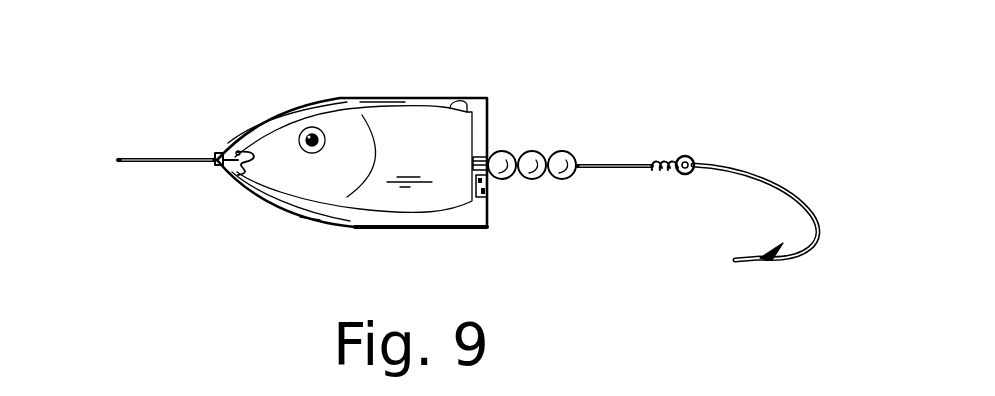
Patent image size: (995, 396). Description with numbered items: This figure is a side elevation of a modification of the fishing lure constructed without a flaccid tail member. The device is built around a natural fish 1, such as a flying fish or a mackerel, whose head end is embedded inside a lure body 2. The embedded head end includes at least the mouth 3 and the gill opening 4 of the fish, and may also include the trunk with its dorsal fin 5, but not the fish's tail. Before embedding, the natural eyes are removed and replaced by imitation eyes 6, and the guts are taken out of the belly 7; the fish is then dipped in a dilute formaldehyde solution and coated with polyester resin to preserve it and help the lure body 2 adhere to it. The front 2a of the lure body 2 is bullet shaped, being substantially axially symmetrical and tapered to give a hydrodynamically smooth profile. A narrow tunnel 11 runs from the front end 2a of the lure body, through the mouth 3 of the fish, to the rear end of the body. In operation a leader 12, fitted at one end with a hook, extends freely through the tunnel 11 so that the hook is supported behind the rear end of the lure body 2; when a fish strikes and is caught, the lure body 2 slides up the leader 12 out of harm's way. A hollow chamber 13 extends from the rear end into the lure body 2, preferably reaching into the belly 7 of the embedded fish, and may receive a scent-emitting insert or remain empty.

The natural fish 1 is at (278, 153).
The lure body 2 is at (362, 84).
The front of the lure body 2a is at (262, 130).
The mouth 3 is at (233, 178).
The gill opening 4 is at (363, 203).
The dorsal fin 5 is at (452, 104).
The imitation eyes 6 is at (318, 130).
The belly 7 is at (414, 203).
The tunnel 11 is at (486, 181).
The leader 12 is at (150, 158).
The hollow chamber 13 is at (487, 208).